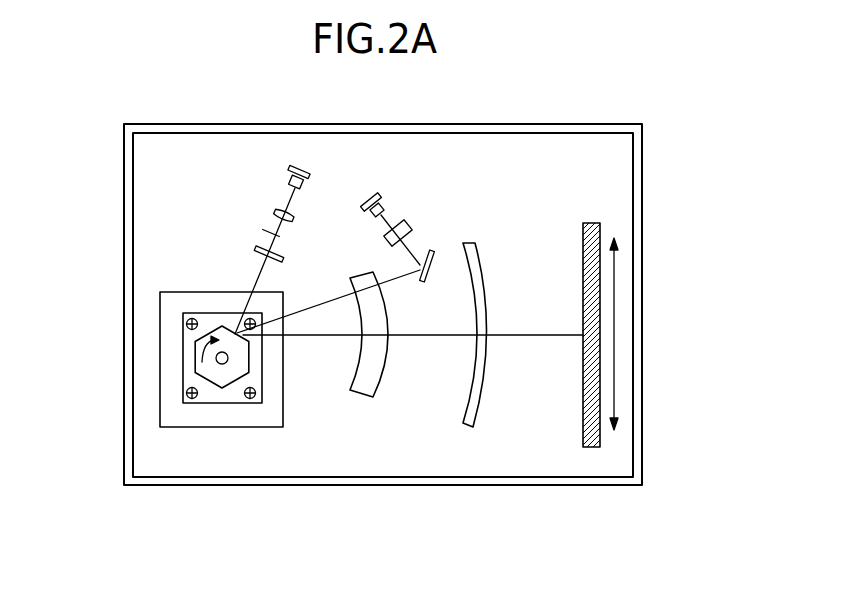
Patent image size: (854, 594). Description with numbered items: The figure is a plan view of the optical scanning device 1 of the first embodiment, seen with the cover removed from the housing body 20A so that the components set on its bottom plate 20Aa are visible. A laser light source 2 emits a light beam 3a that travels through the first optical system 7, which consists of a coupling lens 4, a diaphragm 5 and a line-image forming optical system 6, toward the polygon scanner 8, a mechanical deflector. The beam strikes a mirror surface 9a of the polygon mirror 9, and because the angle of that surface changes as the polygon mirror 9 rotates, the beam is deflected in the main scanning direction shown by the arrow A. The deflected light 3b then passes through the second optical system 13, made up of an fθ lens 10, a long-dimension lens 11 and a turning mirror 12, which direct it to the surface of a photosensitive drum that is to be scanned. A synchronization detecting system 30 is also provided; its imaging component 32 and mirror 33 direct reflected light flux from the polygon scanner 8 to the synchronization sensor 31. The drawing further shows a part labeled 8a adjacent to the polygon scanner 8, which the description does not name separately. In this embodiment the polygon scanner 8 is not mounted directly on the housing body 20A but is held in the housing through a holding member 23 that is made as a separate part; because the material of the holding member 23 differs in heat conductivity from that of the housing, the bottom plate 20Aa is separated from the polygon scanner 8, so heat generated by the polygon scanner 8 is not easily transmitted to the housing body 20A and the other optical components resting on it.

The optical scanning device 1 is at (102, 163).
The laser light source 2 is at (310, 172).
The light beam 3a is at (283, 200).
The deflected light 3b is at (297, 337).
The coupling lens 4 is at (293, 216).
The diaphragm 5 is at (283, 236).
The line-image forming optical system 6 is at (283, 257).
The first optical system 7 is at (263, 198).
The polygon scanner 8 is at (270, 392).
The mirror housing 8a is at (183, 346).
The polygon mirror 9 is at (218, 380).
The mirror surface 9a is at (235, 333).
The fθ lens 10 is at (362, 397).
The long-dimension lens 11 is at (465, 428).
The turning mirror 12 is at (593, 447).
The second optical system 13 is at (607, 527).
The housing body 20A is at (642, 458).
The bottom plate 20Aa is at (580, 185).
The holding member 23 is at (165, 390).
The synchronization detecting system 30 is at (412, 163).
The synchronization sensor 31 is at (383, 206).
The imaging component 32 is at (410, 232).
The mirror 33 is at (432, 255).
The main scanning direction A is at (616, 348).